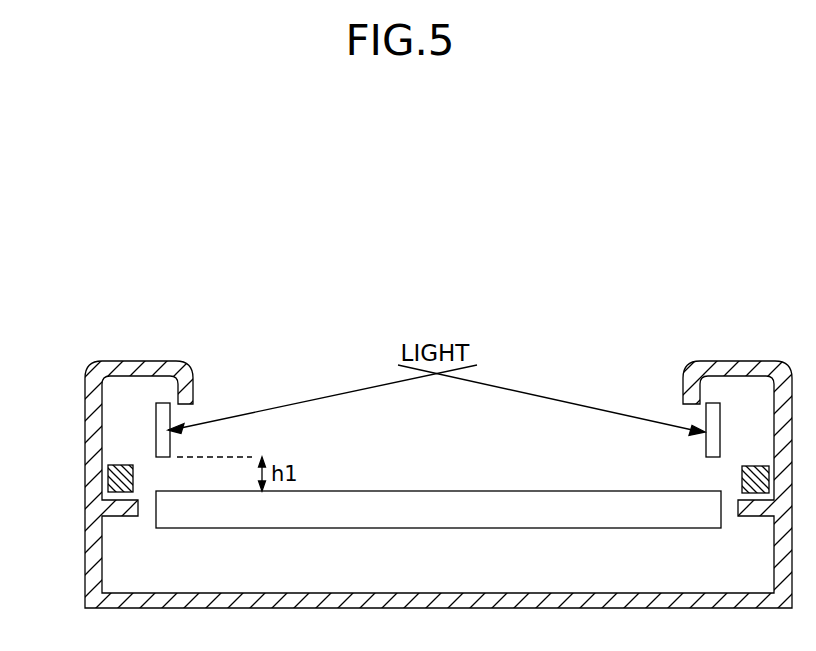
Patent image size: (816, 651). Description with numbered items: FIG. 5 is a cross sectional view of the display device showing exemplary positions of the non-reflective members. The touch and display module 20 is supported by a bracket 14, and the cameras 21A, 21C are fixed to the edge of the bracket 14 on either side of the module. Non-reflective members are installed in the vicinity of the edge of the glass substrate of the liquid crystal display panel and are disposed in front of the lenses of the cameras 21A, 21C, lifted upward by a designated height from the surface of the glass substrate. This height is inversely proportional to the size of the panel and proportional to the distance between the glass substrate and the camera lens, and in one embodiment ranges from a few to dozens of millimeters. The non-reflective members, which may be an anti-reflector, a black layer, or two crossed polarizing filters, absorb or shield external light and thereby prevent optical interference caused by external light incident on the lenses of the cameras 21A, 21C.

The bracket 14 is at (85, 443).
The camera 21A is at (133, 481).
The camera 21C is at (742, 481).
The touch and display module 20 is at (546, 528).